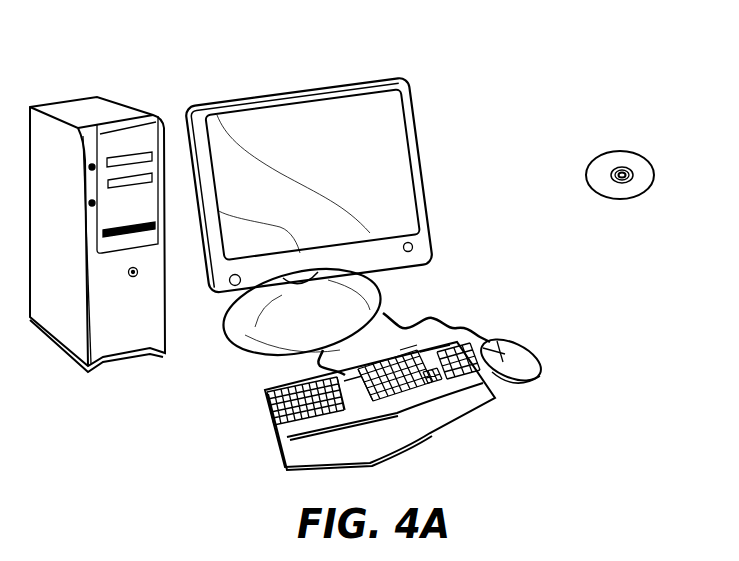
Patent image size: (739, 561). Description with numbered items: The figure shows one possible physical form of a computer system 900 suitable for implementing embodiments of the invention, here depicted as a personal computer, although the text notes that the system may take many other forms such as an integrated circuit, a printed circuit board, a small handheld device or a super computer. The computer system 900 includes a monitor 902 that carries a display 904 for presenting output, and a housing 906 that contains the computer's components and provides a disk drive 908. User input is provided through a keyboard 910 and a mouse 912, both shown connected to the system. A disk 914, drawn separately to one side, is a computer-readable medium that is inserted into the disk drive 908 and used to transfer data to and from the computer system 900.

The computer system 900 is at (542, 62).
The monitor 902 is at (357, 216).
The display 904 is at (377, 120).
The housing 906 is at (83, 108).
The disk drive 908 is at (147, 228).
The keyboard 910 is at (277, 435).
The mouse 912 is at (532, 350).
The disk 914 is at (641, 153).